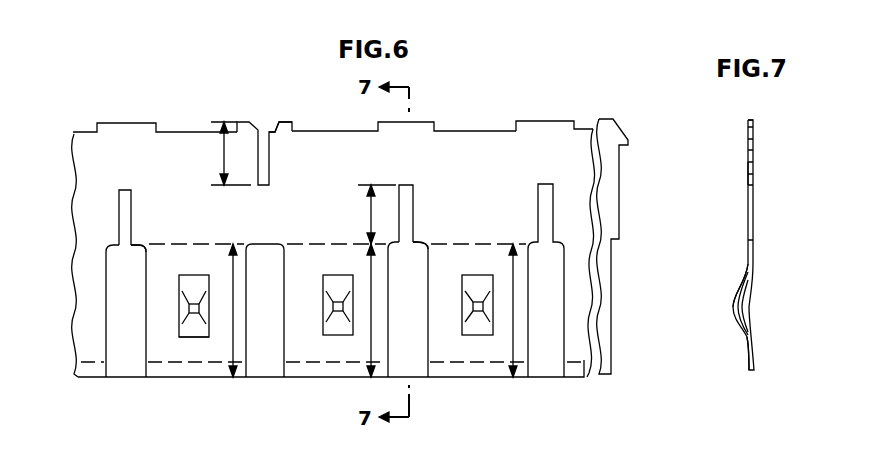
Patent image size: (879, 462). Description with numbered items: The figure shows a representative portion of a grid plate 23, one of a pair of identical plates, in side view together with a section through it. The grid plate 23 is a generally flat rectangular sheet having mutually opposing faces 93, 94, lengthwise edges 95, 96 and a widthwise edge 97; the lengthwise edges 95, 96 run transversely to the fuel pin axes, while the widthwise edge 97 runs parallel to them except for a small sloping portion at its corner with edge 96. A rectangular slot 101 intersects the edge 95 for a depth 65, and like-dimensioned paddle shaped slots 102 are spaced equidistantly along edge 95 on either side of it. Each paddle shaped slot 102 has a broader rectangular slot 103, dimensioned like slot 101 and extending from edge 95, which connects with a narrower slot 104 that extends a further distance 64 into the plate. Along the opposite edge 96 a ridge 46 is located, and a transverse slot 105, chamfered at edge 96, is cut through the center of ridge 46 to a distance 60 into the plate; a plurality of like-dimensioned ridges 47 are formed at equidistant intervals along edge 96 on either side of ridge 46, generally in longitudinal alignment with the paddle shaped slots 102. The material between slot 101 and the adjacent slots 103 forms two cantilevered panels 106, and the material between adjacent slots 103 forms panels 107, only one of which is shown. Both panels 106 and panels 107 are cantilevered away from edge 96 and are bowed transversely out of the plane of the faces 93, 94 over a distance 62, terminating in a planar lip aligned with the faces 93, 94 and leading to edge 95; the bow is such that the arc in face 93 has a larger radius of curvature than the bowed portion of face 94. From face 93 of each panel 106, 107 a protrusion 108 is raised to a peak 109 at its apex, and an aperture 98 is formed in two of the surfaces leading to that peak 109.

In FIG. 6, the grid plate 23 is at (70, 114).
In FIG. 6, the ridge 46 is at (283, 118).
In FIG. 6, the ridges 47 is at (137, 118).
In FIG. 6, the distance 60 is at (223, 148).
In FIG. 6, the distance 62 is at (512, 316).
In FIG. 6, the distance 64 is at (370, 207).
In FIG. 6, the depth 65 is at (232, 316).
In FIG. 7, the face 93 is at (747, 148).
In FIG. 7, the face 94 is at (753, 167).
In FIG. 6, the lengthwise edge 95 is at (473, 375).
In FIG. 7, the lengthwise edge 95 is at (752, 372).
In FIG. 6, the lengthwise edge 96 is at (562, 118).
In FIG. 7, the lengthwise edge 96 is at (750, 118).
In FIG. 6, the widthwise edge 97 is at (612, 268).
In FIG. 7, the aperture 98 is at (742, 297).
In FIG. 6, the rectangular slot 101 is at (258, 242).
In FIG. 6, the paddle shaped slots 102 is at (138, 242).
In FIG. 6, the rectangular slot 103 is at (113, 263).
In FIG. 6, the narrower slot 104 is at (118, 192).
In FIG. 6, the transverse slot 105 is at (268, 157).
In FIG. 6, the cantilevered panels 106 is at (215, 268).
In FIG. 6, the panels 107 is at (488, 265).
In FIG. 6, the protrusion 108 is at (200, 335).
In FIG. 7, the protrusion 108 is at (735, 317).
In FIG. 6, the peak 109 is at (190, 305).
In FIG. 7, the peak 109 is at (733, 298).